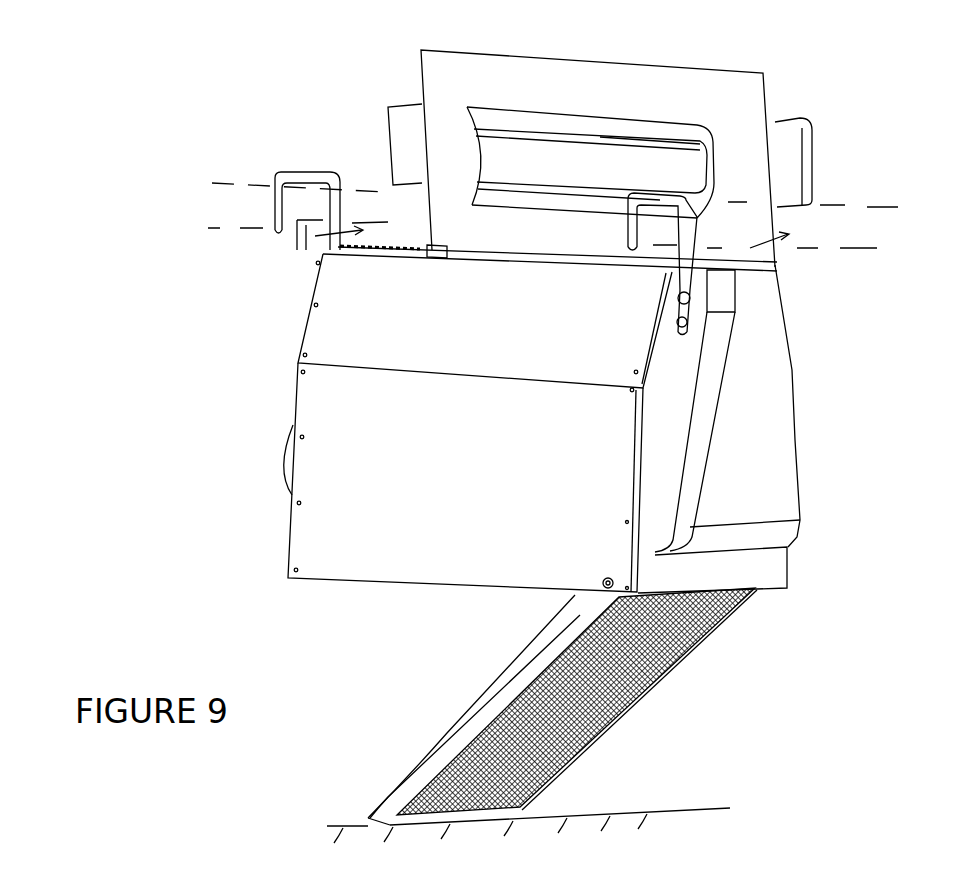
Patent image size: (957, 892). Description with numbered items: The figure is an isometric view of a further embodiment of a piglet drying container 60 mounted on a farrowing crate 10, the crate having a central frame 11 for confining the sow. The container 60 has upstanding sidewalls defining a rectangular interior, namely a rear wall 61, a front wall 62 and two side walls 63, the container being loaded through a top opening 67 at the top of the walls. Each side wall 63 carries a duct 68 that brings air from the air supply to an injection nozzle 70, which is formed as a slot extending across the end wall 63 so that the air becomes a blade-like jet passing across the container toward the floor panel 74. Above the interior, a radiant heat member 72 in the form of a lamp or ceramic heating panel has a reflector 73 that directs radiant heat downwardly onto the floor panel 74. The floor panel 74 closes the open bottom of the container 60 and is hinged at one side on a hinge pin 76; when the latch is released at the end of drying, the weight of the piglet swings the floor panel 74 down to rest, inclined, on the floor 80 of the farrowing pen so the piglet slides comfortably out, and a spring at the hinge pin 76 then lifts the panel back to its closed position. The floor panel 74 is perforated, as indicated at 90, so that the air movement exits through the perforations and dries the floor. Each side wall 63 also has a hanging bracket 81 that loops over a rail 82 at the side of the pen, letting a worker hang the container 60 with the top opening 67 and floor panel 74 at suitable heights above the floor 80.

The farrowing crate 10 is at (590, 24).
The central frame 11 is at (786, 257).
The container 60 is at (516, 419).
The rear wall 61 is at (560, 484).
The front wall 62 is at (798, 395).
The side walls 63 is at (767, 565).
The top opening 67 is at (545, 262).
The duct 68 is at (765, 455).
The injection nozzle 70 is at (740, 545).
The radiant heat member 72 is at (543, 172).
The reflector 73 is at (618, 157).
The floor panel 74 is at (468, 697).
The hinge pin 76 is at (604, 578).
The floor of the farrowing pen 80 is at (667, 808).
The hanging bracket 81 is at (315, 173).
The rail 82 is at (870, 220).
The perforated floor 90 is at (700, 632).